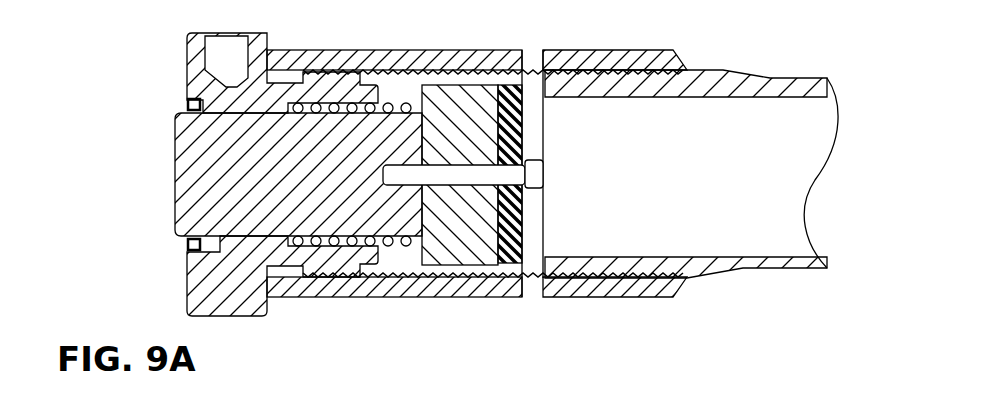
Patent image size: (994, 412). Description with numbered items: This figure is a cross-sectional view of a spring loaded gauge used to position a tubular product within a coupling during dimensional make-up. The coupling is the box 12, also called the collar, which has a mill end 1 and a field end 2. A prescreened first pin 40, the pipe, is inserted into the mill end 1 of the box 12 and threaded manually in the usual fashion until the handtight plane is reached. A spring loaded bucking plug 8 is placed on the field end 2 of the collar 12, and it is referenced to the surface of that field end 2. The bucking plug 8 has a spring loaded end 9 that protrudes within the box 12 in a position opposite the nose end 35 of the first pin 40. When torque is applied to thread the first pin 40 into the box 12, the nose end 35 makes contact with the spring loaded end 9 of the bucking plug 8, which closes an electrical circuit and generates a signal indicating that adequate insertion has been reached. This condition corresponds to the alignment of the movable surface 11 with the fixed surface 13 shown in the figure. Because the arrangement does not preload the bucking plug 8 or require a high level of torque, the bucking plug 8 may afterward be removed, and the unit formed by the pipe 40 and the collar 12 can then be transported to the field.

The mill end 1 is at (676, 50).
The field end 2 is at (278, 300).
The bucking plug 8 is at (160, 201).
The spring loaded end 9 is at (547, 299).
The movable surface 11 is at (190, 244).
The box 12 is at (403, 299).
The fixed surface 13 is at (183, 74).
The nose end 35 is at (502, 80).
The first pin 40 is at (742, 279).